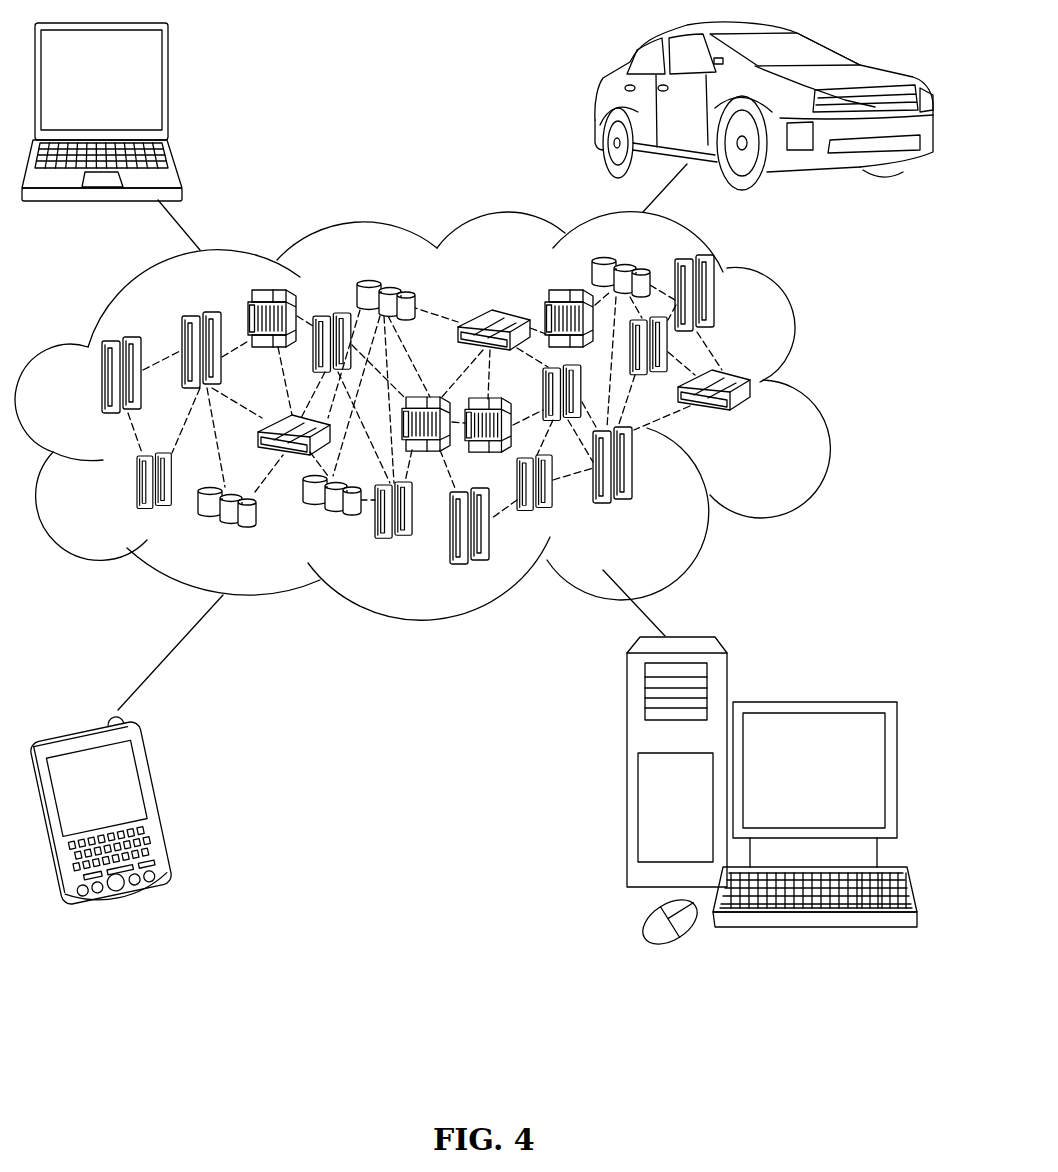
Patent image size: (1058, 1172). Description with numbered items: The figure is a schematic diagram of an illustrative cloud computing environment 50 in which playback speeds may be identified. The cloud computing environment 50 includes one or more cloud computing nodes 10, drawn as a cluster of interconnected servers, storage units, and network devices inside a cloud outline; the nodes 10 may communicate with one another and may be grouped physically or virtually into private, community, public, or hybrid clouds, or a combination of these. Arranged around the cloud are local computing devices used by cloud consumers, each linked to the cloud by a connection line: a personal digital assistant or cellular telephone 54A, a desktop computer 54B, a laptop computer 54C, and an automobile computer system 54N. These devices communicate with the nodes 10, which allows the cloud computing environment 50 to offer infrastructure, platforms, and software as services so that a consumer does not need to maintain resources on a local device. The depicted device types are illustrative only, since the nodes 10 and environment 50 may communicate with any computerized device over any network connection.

The cloud computing node 10 is at (758, 424).
The cloud computing environment 50 is at (812, 384).
The personal digital assistant or cellular telephone 54A is at (160, 803).
The desktop computer 54B is at (810, 701).
The laptop computer 54C is at (170, 91).
The automobile computer system 54N is at (598, 108).